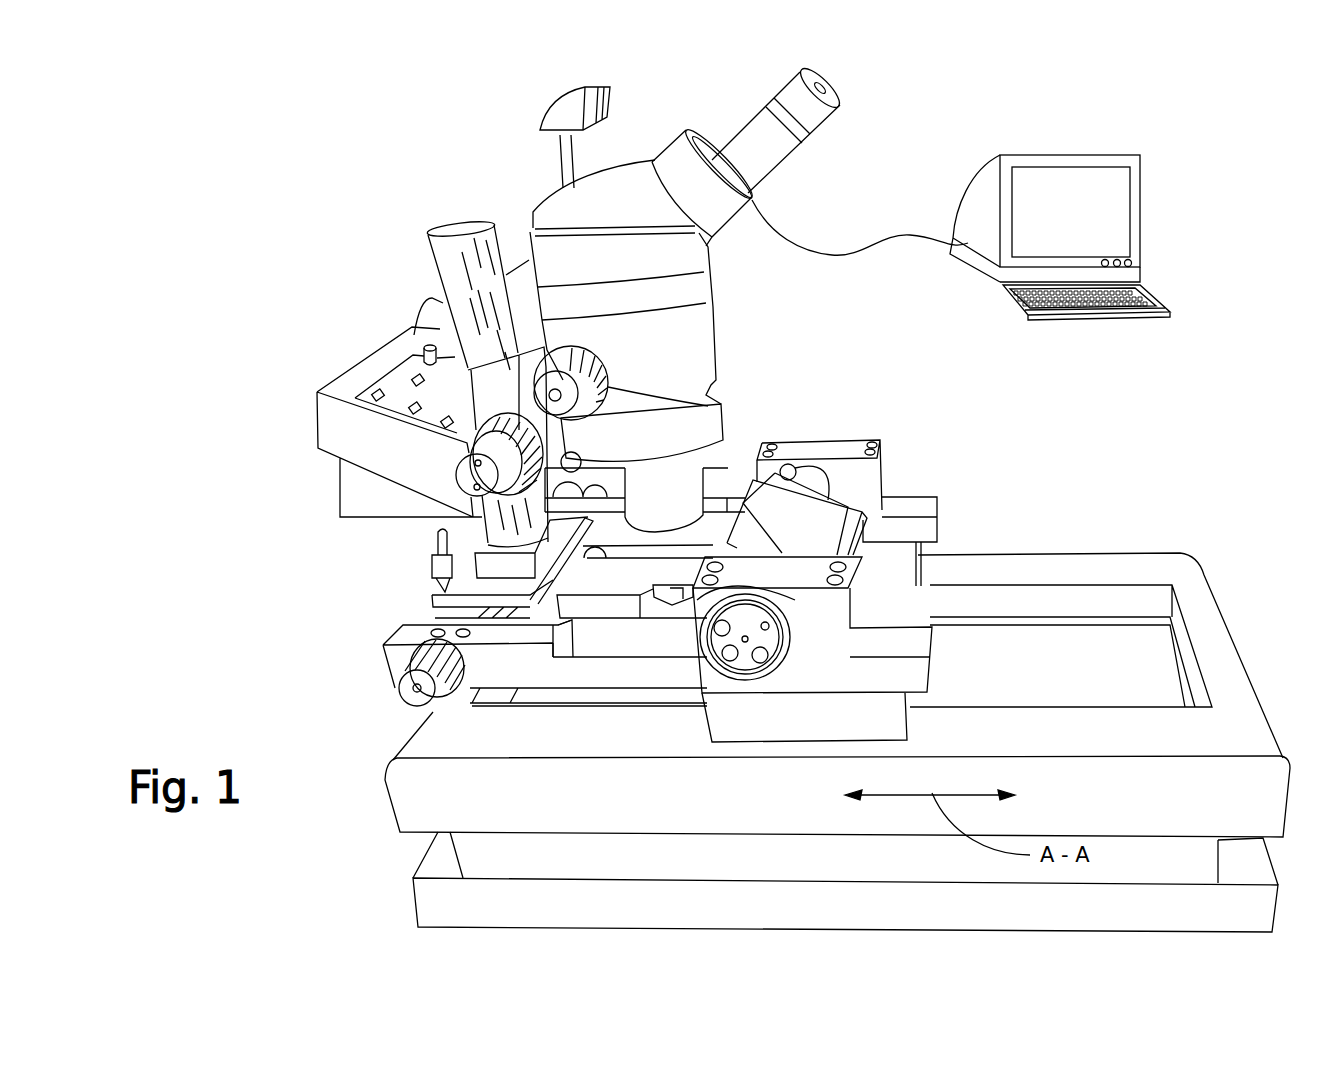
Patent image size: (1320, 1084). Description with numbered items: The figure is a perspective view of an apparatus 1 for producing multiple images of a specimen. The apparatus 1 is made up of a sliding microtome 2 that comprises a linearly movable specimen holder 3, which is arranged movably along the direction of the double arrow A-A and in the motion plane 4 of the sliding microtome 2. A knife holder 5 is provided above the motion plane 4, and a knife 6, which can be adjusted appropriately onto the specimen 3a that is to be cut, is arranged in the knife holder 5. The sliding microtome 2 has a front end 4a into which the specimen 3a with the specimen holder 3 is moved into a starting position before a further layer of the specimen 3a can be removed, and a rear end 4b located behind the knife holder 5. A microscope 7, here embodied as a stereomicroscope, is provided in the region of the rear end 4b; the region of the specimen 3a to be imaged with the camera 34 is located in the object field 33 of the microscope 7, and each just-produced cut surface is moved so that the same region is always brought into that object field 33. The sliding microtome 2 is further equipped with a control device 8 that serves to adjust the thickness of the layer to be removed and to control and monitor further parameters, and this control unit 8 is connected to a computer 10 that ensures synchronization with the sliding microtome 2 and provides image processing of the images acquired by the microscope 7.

The apparatus 1 is at (950, 405).
The sliding microtome 2 is at (485, 850).
The specimen holder 3 is at (633, 623).
The specimen 3a is at (662, 592).
The object field 33 is at (683, 602).
The motion plane 4 is at (1077, 653).
The front end 4a is at (1210, 633).
The rear end 4b is at (430, 738).
The knife holder 5 is at (847, 470).
The knife 6 is at (878, 530).
The microscope 7 is at (640, 270).
The control device 8 is at (358, 443).
The computer 10 is at (1117, 198).
The camera 34 is at (565, 113).